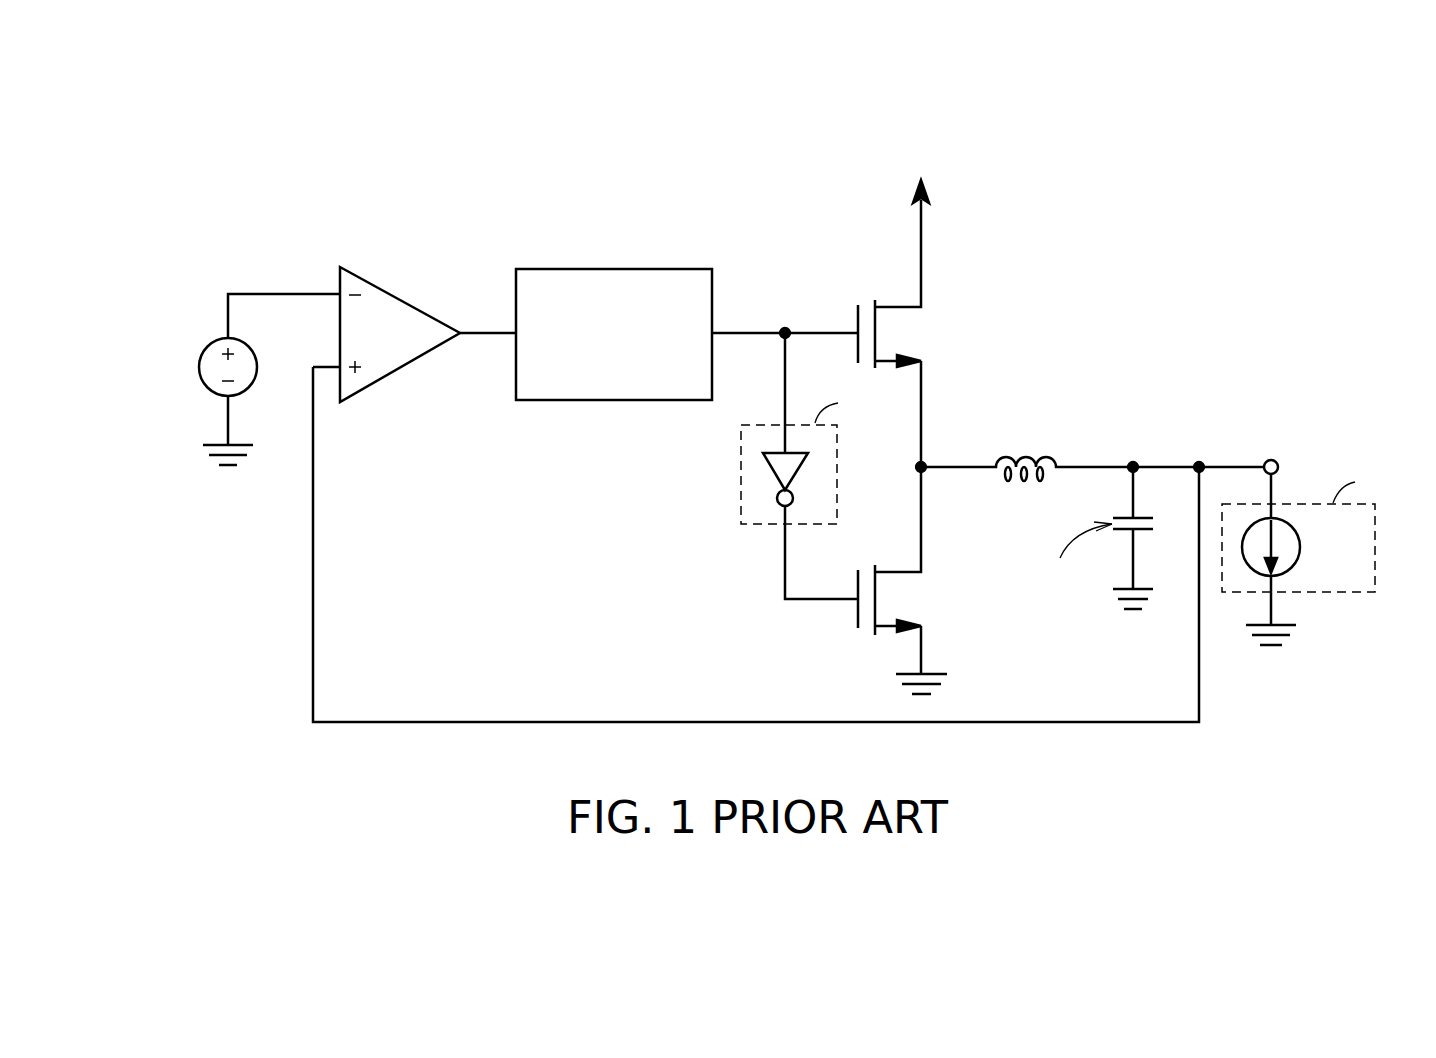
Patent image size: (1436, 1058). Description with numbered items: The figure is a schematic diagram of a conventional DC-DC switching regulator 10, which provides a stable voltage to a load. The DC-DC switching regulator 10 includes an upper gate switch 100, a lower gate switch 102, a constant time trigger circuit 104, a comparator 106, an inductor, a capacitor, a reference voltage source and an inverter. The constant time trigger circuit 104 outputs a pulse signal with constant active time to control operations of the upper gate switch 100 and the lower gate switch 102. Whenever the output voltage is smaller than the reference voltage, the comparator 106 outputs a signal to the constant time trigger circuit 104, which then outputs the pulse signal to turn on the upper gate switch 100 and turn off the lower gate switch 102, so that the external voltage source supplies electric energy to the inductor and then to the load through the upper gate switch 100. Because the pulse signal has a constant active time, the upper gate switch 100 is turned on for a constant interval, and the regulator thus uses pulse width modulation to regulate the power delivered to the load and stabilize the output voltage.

The DC-DC switching regulator 10 is at (1162, 255).
The upper gate switch 100 is at (921, 333).
The lower gate switch 102 is at (921, 592).
The constant time trigger circuit 104 is at (682, 268).
The comparator 106 is at (403, 296).